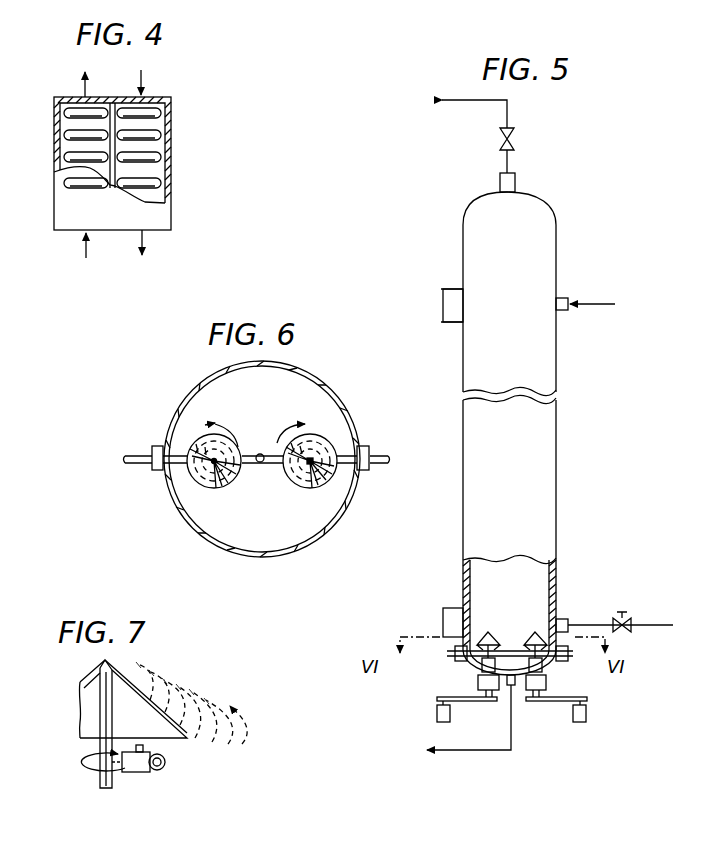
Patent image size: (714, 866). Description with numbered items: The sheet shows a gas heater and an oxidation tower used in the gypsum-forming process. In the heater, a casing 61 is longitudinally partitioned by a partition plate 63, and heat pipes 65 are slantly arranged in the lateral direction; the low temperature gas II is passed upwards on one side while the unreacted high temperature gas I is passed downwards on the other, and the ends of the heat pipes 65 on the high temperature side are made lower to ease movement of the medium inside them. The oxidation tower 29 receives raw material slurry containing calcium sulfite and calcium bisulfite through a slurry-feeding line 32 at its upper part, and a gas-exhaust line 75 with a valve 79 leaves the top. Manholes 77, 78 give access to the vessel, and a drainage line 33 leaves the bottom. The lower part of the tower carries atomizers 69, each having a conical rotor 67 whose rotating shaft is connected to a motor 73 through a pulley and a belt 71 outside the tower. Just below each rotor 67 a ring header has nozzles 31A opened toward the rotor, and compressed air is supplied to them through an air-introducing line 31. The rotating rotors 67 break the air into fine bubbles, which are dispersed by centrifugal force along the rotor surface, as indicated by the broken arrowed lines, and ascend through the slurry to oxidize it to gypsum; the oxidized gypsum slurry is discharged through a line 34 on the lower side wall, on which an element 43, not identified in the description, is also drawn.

In FIG. 4, the high temperature gas I is at (141, 76).
In FIG. 4, the low temperature gas II is at (86, 256).
In FIG. 6, the oxidation tower 29 is at (330, 388).
In FIG. 5, the oxidation tower 29 is at (558, 366).
In FIG. 6, the air-introducing line 31 is at (140, 455).
In FIG. 5, the air-introducing line 31 is at (450, 656).
In FIG. 6, the nozzles 31A is at (203, 494).
In FIG. 7, the nozzles 31A is at (160, 748).
In FIG. 5, the nozzles 31A is at (524, 655).
In FIG. 5, the raw material slurry-feeding line 32 is at (604, 304).
In FIG. 6, the drainage line 33 is at (260, 453).
In FIG. 5, the drainage line 33 is at (513, 735).
In FIG. 5, the line for discharging oxidized gypsum slurry 34 is at (582, 625).
In FIG. 5, the valve 43 is at (630, 628).
In FIG. 4, the casing 61 is at (171, 161).
In FIG. 4, the partition plate 63 is at (108, 170).
In FIG. 4, the heat pipes 65 is at (165, 120).
In FIG. 6, the conical rotor 67 is at (226, 478).
In FIG. 7, the conical rotor 67 is at (160, 700).
In FIG. 5, the conical rotor 67 is at (487, 631).
In FIG. 5, the atomizers 69 is at (478, 682).
In FIG. 5, the pulley and belt 71 is at (466, 702).
In FIG. 5, the motor 73 is at (437, 710).
In FIG. 5, the gas-exhaust line 75 is at (507, 166).
In FIG. 5, the manhole 77 is at (455, 607).
In FIG. 5, the manhole 78 is at (452, 290).
In FIG. 5, the valve 79 is at (500, 139).